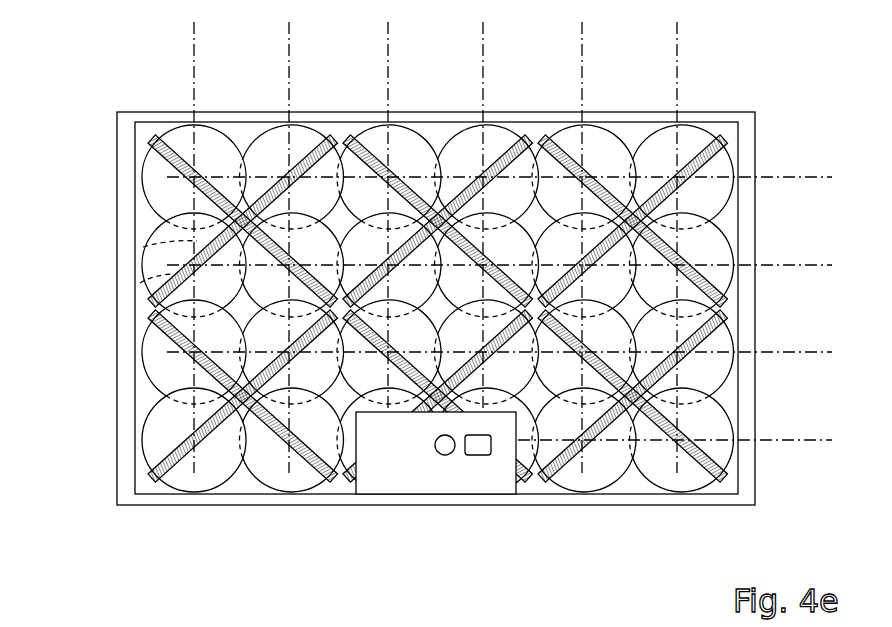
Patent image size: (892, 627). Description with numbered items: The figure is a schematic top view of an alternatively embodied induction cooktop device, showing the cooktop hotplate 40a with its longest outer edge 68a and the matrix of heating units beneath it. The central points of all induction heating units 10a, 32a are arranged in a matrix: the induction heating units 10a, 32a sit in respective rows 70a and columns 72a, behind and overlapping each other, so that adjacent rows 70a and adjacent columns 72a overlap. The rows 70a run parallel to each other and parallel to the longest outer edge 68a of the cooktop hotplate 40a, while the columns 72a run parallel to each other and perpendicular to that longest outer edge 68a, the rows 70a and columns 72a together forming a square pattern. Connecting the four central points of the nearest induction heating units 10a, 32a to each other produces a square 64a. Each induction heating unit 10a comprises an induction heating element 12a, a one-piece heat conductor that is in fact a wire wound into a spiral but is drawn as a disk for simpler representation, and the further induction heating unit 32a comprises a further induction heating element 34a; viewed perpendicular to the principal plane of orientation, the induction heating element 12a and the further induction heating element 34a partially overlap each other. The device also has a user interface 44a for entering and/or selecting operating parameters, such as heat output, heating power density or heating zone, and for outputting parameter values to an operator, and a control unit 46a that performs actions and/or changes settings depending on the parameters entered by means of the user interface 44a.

The induction heating unit 10a is at (432, 302).
The induction heating element 12a is at (152, 184).
The further induction heating unit 32a is at (147, 302).
The further induction heating element 34a is at (140, 279).
The cooktop hotplate 40a is at (429, 273).
The user interface 44a is at (447, 456).
The control unit 46a is at (478, 457).
The square 64a is at (140, 241).
The longest outer edge 68a is at (643, 507).
The rows 70a is at (805, 178).
The columns 72a is at (192, 62).